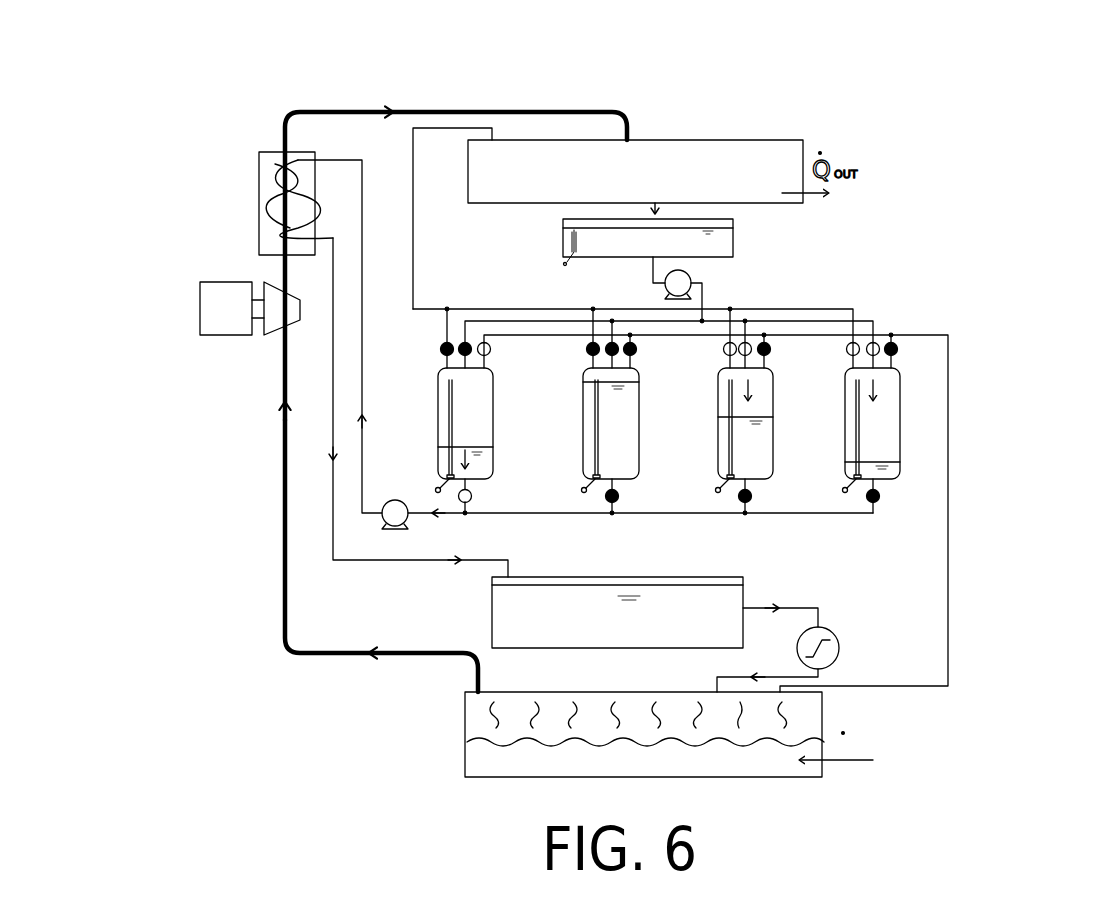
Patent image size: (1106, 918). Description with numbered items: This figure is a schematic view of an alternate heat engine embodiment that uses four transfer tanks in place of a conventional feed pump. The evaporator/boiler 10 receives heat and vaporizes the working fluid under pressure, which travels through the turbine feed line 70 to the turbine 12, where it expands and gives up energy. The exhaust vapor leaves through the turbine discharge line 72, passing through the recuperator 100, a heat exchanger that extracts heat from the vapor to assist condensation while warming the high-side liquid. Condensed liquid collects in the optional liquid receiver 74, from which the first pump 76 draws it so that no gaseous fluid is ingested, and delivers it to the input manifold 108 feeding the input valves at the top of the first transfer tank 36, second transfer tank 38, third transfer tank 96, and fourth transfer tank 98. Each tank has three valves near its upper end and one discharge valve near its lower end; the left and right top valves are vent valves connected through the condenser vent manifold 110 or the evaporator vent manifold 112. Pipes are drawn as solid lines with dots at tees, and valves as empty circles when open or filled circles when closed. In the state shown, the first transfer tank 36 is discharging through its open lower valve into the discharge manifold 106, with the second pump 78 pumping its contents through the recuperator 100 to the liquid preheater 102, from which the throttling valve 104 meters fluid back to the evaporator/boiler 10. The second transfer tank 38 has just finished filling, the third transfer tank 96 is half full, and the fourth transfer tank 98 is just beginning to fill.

The evaporator/boiler 10 is at (822, 717).
The turbine 12 is at (268, 324).
The first transfer tank 36 is at (437, 424).
The second transfer tank 38 is at (562, 437).
The turbine feed line 70 is at (285, 625).
The turbine discharge line 72 is at (385, 105).
The liquid receiver 74 is at (733, 248).
The first pump 76 is at (682, 283).
The second pump 78 is at (392, 515).
The third transfer tank 96 is at (773, 460).
The fourth transfer tank 98 is at (900, 392).
The recuperator 100 is at (265, 160).
The liquid preheater 102 is at (743, 580).
The throttling valve 104 is at (838, 644).
The discharge manifold 106 is at (510, 514).
The input manifold 108 is at (792, 321).
The condenser vent manifold 110 is at (485, 309).
The evaporator vent manifold 112 is at (925, 335).